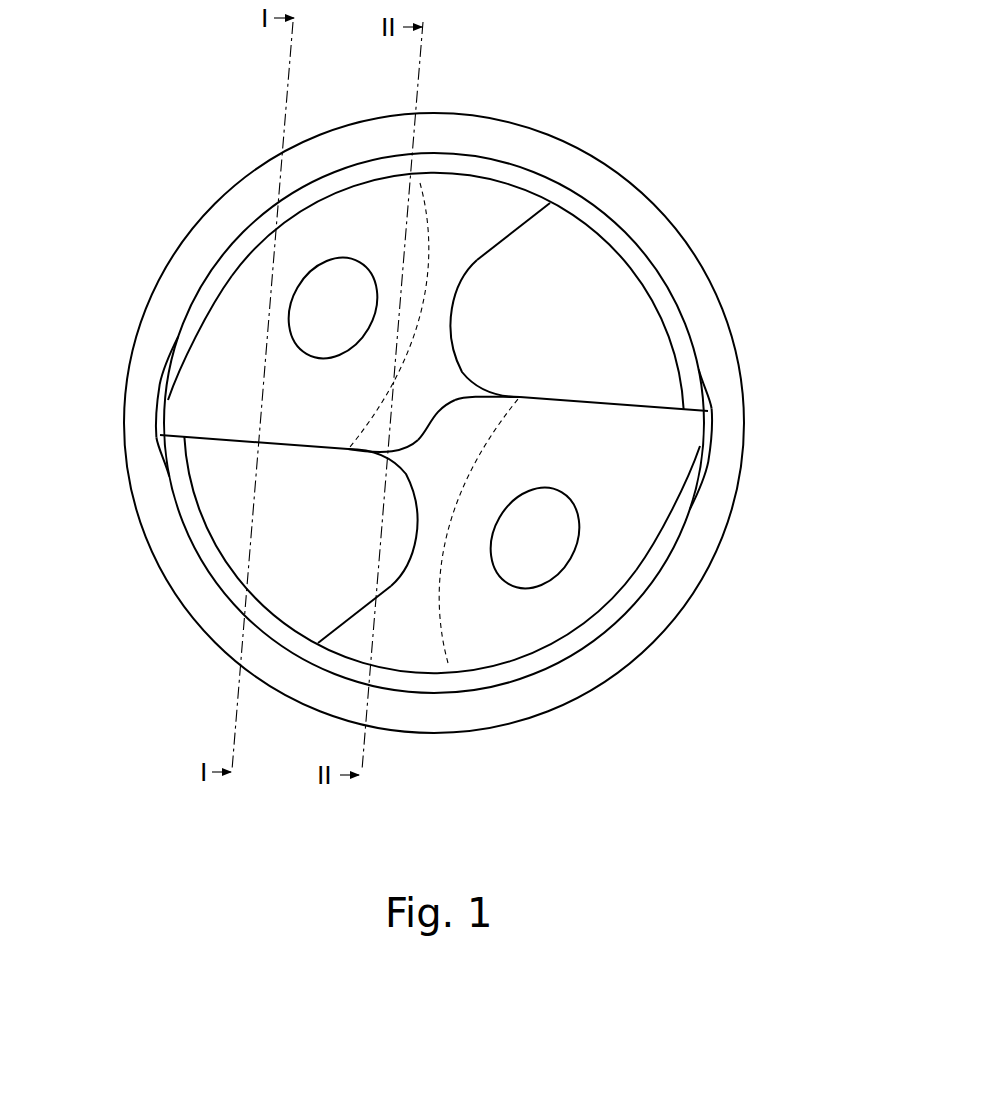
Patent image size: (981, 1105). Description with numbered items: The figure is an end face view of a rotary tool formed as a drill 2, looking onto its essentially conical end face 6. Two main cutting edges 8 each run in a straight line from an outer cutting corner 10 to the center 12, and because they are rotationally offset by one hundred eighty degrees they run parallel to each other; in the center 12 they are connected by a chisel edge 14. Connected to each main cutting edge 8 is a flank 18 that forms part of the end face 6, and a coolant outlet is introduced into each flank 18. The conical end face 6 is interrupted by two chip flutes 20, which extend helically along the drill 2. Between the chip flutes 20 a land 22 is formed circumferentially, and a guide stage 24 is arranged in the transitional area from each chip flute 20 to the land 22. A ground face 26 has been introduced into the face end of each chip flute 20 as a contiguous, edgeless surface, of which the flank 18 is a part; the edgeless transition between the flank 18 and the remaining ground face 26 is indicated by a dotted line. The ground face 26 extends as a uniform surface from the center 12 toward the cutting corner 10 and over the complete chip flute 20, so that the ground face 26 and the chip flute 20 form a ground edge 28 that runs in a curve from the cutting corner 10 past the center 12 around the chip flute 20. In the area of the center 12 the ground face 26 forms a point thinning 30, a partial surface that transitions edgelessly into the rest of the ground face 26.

The drill 2 is at (668, 82).
The end face 6 is at (639, 531).
The main cutting edge 8 is at (617, 405).
The cutting corner 10 is at (153, 437).
The center 12 is at (432, 440).
The chisel edge 14 is at (434, 427).
The flank 18 is at (217, 345).
The chip flute 20 is at (622, 290).
The land 22 is at (250, 263).
The guide stage 24 is at (160, 421).
The ground face 26 is at (482, 210).
The ground edge 28 is at (500, 392).
The point thinning 30 is at (463, 443).